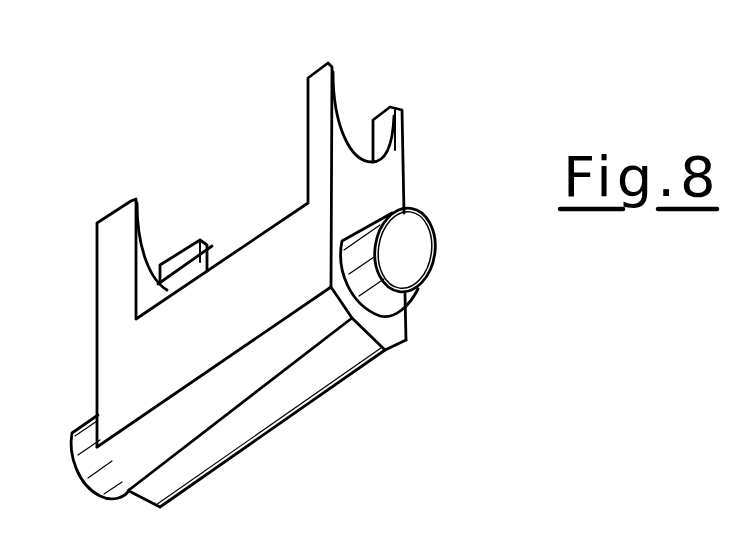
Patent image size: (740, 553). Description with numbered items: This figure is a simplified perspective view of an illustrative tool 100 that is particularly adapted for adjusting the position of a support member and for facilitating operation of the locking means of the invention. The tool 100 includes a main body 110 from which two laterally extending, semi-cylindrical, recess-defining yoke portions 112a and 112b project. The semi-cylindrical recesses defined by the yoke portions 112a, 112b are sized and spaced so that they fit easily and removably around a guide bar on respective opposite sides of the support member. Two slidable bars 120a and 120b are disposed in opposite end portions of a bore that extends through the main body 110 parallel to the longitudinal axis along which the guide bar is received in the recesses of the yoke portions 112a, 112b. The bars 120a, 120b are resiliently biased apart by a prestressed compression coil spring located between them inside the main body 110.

The tool 100 is at (127, 155).
The main body 110 is at (250, 422).
The yoke portion 112a is at (192, 254).
The yoke portion 112b is at (388, 120).
The slidable bar 120a is at (93, 470).
The slidable bar 120b is at (413, 256).